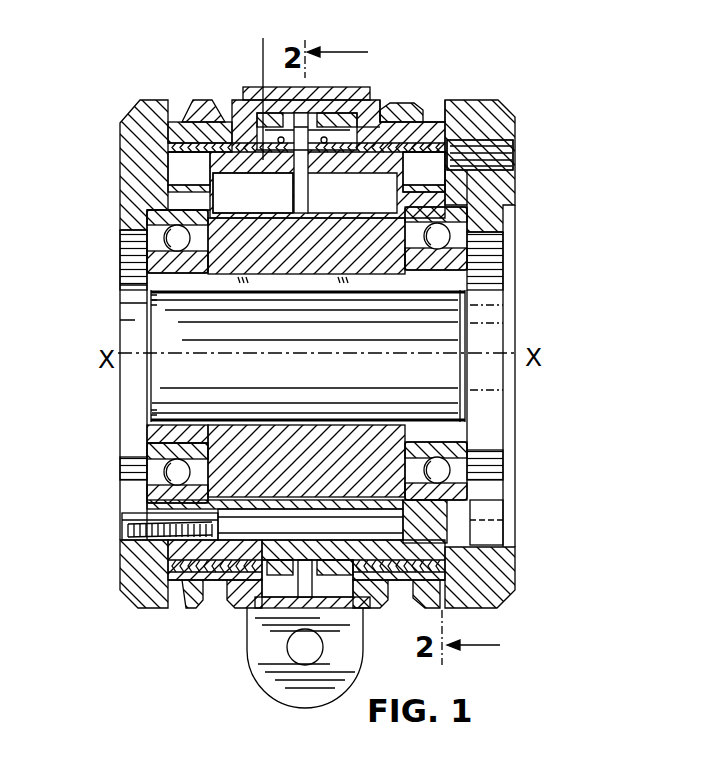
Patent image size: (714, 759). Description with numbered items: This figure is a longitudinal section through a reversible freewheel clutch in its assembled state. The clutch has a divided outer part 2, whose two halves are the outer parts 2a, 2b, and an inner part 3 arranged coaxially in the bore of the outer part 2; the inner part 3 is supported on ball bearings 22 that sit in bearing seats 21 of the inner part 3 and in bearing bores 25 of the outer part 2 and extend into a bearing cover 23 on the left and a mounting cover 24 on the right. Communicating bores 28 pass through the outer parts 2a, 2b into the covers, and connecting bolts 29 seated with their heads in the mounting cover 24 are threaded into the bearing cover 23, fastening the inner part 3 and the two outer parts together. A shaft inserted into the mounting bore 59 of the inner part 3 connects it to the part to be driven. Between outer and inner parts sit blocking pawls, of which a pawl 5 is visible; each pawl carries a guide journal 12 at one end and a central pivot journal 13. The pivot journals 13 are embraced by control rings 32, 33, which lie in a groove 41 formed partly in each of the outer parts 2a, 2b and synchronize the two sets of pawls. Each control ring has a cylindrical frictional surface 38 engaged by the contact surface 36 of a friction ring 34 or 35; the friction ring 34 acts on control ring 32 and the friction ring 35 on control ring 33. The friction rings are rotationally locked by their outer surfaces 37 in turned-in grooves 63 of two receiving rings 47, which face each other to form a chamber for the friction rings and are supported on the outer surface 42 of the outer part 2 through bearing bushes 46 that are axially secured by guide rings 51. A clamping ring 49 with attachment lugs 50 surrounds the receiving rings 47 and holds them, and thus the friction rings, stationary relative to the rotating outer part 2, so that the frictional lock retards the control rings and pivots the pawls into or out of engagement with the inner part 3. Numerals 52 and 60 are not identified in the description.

The outer part 2 is at (222, 150).
The outer part 2a is at (215, 198).
The outer part 2b is at (455, 232).
The inner part 3 is at (227, 250).
The blocking pawl 5 is at (165, 185).
The guide journal 12 is at (515, 197).
The pivot journal 13 is at (308, 192).
The bearing seat 21 is at (150, 447).
The ball bearing 22 is at (167, 473).
The bearing cover 23 is at (145, 553).
The mounting cover 24 is at (445, 133).
The bearing bore 25 is at (225, 470).
The communicating bore 28 is at (125, 523).
The connecting bolt 29 is at (488, 513).
The control ring 32 is at (250, 172).
The control ring 33 is at (488, 280).
The friction ring 34 is at (278, 118).
The friction ring 35 is at (400, 110).
The contact surface 36 is at (462, 258).
The outer surface 37 is at (327, 120).
The frictional surface 38 is at (396, 103).
The groove 41 is at (290, 172).
The outer surface 42 is at (196, 118).
The bearing bush 46 is at (190, 135).
The receiving ring 47 is at (237, 108).
The clamping ring 49 is at (348, 112).
The attachment lug 50 is at (258, 638).
The guide ring 51 is at (215, 138).
The bolt 52 is at (430, 108).
The mounting bore 59 is at (182, 348).
The seal 60 is at (500, 158).
The turned-in groove 63 is at (264, 86).